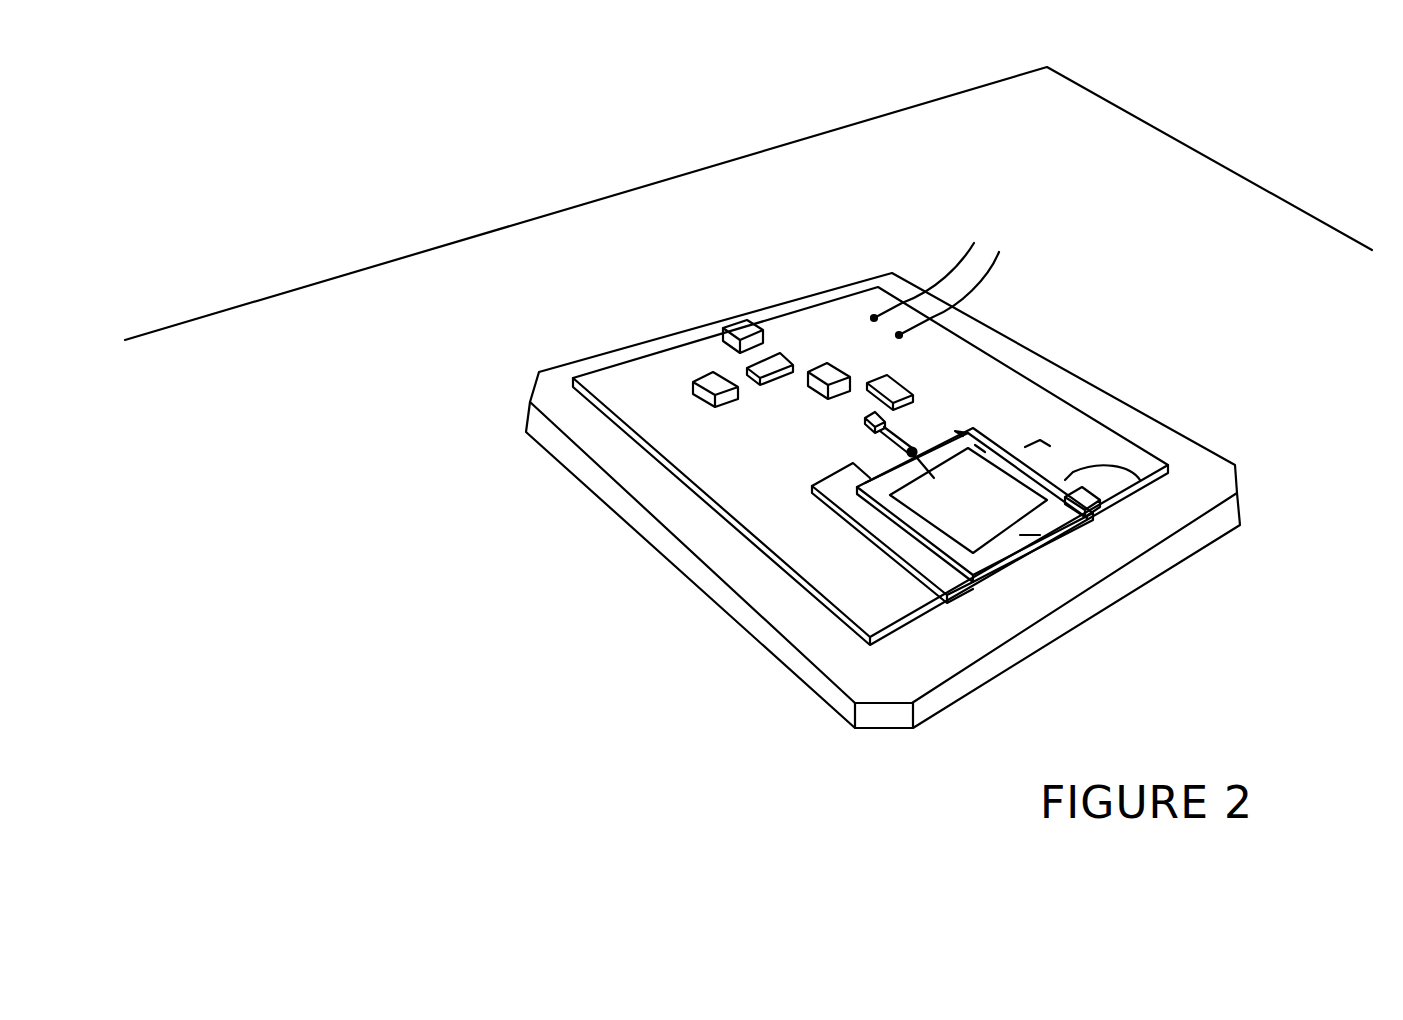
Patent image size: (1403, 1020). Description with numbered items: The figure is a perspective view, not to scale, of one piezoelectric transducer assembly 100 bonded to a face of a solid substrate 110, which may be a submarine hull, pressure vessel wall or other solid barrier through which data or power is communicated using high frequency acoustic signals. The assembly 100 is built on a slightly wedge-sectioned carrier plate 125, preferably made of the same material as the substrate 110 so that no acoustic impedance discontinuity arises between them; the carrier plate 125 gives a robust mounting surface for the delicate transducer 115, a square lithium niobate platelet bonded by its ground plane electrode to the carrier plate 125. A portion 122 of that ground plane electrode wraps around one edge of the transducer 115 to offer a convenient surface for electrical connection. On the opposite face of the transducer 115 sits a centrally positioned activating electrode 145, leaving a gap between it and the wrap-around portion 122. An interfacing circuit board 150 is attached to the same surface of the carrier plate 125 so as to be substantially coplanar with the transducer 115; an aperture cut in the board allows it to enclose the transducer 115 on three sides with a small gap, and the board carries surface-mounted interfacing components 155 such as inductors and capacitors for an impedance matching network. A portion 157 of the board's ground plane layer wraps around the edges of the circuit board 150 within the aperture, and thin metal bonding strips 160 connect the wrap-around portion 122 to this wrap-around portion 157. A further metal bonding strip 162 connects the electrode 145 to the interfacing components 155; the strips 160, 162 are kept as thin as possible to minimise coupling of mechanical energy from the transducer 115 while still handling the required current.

The piezoelectric transducer assembly 100 is at (1125, 316).
The solid substrate 110 is at (1093, 127).
The transducer 115 is at (1040, 535).
The wrap-around portion of the ground plane electrode 122 is at (1140, 480).
The carrier plate 125 is at (1207, 470).
The electrode 145 is at (981, 531).
The interfacing circuit board 150 is at (625, 379).
The interfacing components 155 is at (741, 324).
The wrap-around portion of the circuit board ground plane layer 157 is at (891, 527).
The metal bonding strips 160 is at (1028, 462).
The metal bonding strip 162 is at (913, 469).